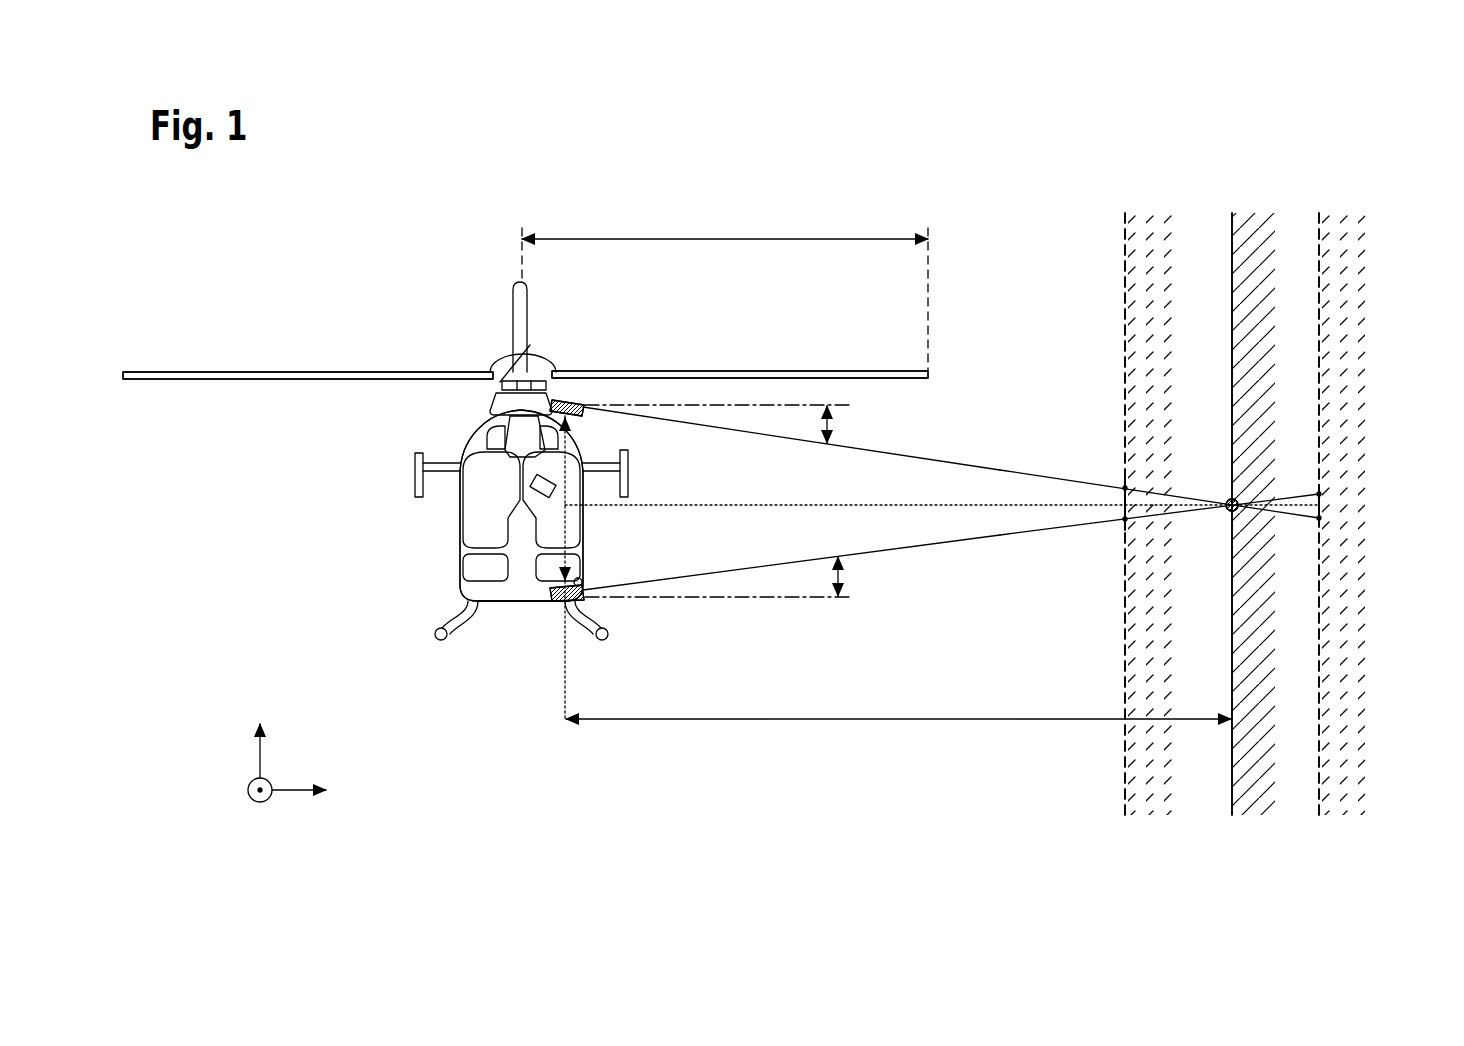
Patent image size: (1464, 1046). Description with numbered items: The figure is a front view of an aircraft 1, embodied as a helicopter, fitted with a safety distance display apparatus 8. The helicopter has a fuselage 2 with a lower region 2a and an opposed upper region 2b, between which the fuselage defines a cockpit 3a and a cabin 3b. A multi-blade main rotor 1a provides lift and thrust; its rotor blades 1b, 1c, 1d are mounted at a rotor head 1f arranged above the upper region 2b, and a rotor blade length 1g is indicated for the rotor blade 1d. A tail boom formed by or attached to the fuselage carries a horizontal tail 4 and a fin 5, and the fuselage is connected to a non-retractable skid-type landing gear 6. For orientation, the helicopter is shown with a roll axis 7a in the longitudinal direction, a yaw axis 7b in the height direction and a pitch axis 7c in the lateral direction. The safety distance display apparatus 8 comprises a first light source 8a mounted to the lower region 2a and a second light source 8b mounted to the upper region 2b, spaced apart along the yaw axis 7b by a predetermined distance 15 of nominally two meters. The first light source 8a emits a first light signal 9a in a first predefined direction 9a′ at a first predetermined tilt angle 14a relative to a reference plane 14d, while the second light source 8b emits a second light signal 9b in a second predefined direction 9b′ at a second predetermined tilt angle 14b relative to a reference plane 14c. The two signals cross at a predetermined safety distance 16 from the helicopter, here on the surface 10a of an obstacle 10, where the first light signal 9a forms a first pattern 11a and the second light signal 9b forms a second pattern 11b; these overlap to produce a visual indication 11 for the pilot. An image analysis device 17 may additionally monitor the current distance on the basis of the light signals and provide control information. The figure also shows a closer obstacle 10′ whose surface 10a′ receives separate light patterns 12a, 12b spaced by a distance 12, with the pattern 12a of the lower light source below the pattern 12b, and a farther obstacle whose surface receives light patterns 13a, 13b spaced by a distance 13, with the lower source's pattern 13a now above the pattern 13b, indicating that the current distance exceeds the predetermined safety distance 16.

The aircraft 1 is at (270, 240).
The multi-blade main rotor 1a is at (486, 359).
The rotor blade 1b is at (200, 370).
The rotor blade 1c is at (530, 352).
The rotor blade 1d is at (790, 371).
The rotor head 1f is at (568, 357).
The rotor blade length 1g is at (718, 238).
The fuselage 2 is at (470, 440).
The lower region 2a is at (505, 607).
The upper region 2b is at (468, 409).
The cockpit 3a is at (495, 538).
The cabin 3b is at (445, 537).
The horizontal tail 4 is at (455, 445).
The fin 5 is at (513, 290).
The landing gear 6 is at (450, 633).
The roll axis 7a is at (252, 798).
The yaw axis 7b is at (258, 752).
The pitch axis 7c is at (300, 800).
The safety distance display apparatus 8 is at (556, 610).
The first light source 8a is at (586, 584).
The second light source 8b is at (586, 419).
The first light signal 9a is at (992, 546).
The first predefined direction 9a′ is at (929, 547).
The second light signal 9b is at (1040, 470).
The second predefined direction 9b′ is at (980, 466).
The obstacle 10 is at (1250, 805).
The obstacle in first position 10′ is at (1140, 805).
The surface 10a is at (1230, 750).
The illuminated surface 10a′ is at (1122, 774).
The visual indication 11 is at (1229, 513).
The first pattern 11a is at (1227, 499).
The second pattern 11b is at (1211, 469).
The distance 12 is at (1121, 518).
The light pattern 12a is at (1125, 533).
The light pattern 12b is at (1120, 483).
The distance 13 is at (1317, 522).
The light pattern 13a is at (1316, 490).
The light pattern 13b is at (1317, 516).
The first predetermined tilt angle 14a is at (840, 562).
The second predetermined tilt angle 14b is at (830, 447).
The reference plane 14c is at (852, 405).
The reference plane 14d is at (760, 600).
The predetermined distance 15 is at (585, 511).
The predetermined safety distance 16 is at (887, 722).
The image analysis device 17 is at (532, 485).